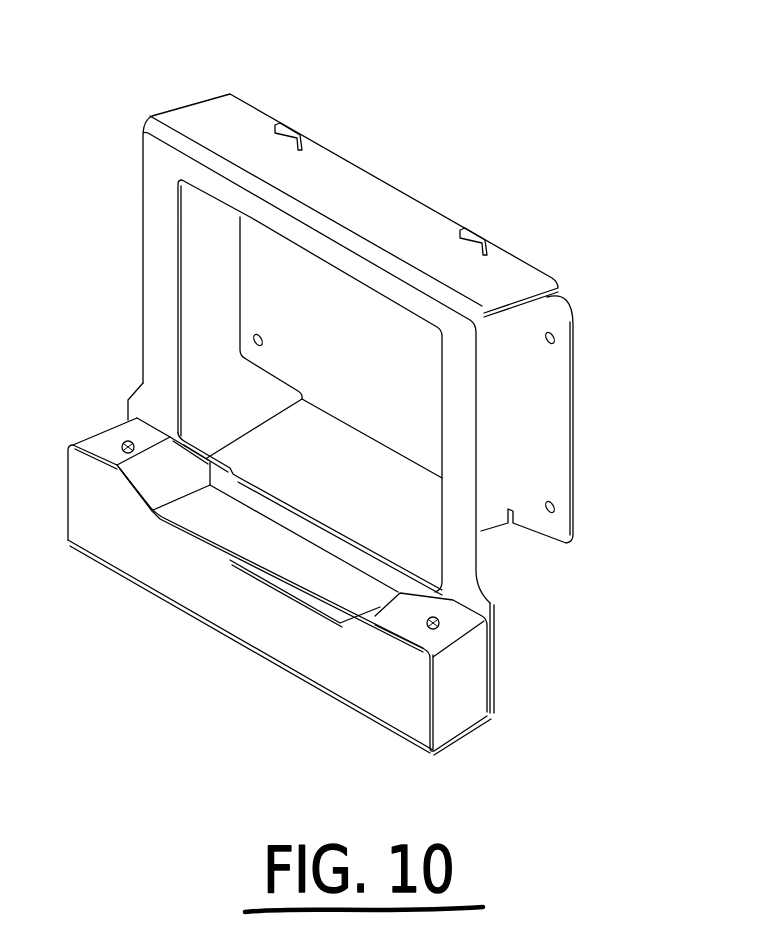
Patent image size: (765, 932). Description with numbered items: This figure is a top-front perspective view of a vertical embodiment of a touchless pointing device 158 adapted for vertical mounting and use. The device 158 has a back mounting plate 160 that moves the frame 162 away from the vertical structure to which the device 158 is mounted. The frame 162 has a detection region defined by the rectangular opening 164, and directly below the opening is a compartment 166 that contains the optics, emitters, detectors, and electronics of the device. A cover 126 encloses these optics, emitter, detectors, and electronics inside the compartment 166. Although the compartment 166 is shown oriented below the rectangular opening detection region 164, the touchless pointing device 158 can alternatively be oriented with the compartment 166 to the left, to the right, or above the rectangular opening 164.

The touchless pointing device 158 is at (370, 387).
The frame 162 is at (304, 348).
The rectangular opening 164 is at (208, 236).
The back mounting plate 160 is at (560, 392).
The cover 126 is at (250, 540).
The compartment 166 is at (465, 675).